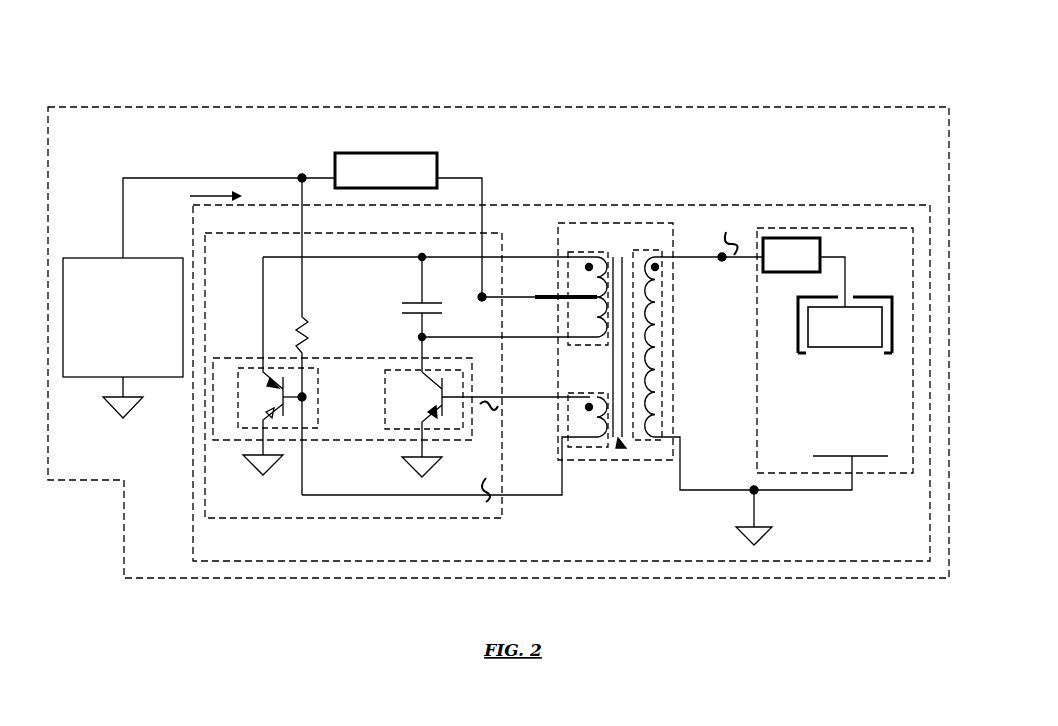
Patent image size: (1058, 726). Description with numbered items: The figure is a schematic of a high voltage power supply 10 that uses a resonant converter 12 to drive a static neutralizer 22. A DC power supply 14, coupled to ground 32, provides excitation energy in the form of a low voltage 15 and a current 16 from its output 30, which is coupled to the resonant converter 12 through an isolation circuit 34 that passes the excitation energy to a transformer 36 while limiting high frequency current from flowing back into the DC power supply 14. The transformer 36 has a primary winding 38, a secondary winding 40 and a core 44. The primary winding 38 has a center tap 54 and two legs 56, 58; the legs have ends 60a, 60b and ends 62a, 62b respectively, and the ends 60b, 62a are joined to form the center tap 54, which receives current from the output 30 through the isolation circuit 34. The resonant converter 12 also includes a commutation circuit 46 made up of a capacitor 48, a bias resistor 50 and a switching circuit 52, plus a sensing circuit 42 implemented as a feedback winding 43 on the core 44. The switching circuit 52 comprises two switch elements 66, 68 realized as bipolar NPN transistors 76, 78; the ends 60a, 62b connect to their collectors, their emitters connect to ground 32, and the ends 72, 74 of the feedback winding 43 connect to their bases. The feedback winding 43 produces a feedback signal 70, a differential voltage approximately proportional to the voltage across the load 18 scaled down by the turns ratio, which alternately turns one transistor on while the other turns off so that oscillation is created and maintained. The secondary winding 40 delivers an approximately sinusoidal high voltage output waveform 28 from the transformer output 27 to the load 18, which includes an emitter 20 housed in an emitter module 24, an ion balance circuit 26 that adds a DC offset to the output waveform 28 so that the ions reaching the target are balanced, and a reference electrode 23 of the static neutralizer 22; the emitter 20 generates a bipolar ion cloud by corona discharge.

The high voltage power supply 10 is at (170, 577).
The resonant converter 12 is at (890, 204).
The DC power supply 14 is at (199, 277).
The low voltage 15 is at (136, 170).
The current 16 is at (246, 193).
The load 18 is at (805, 472).
The emitter 20 is at (876, 345).
The static neutralizer 22 is at (680, 98).
The reference electrode 23 is at (875, 458).
The emitter module 24 is at (872, 297).
The ion balance circuit 26 is at (804, 272).
The transformer output 27 is at (722, 261).
The output waveform 28 is at (738, 218).
The output 30 is at (302, 175).
The ground 32 is at (132, 408).
The isolation circuit 34 is at (408, 225).
The transformer 36 is at (660, 458).
The primary winding 38 is at (612, 252).
The secondary winding 40 is at (666, 392).
The sensing circuit 42 is at (568, 422).
The feedback winding 43 is at (596, 442).
The core 44 is at (620, 450).
The commutation circuit 46 is at (416, 518).
The capacitor 48 is at (410, 312).
The bias resistor 50 is at (305, 320).
The switching circuit 52 is at (312, 441).
The center tap 54 is at (482, 293).
The leg 56 is at (586, 262).
The leg 58 is at (596, 325).
The end 60a is at (536, 257).
The end 60b is at (552, 297).
The end 62a is at (550, 298).
The end 62b is at (540, 338).
The switch element 66 is at (317, 404).
The switch element 68 is at (390, 408).
The feedback signal 70 is at (488, 420).
The end 72 is at (560, 496).
The end 74 is at (542, 397).
The bipolar NPN transistor 76 is at (265, 380).
The bipolar NPN transistor 78 is at (422, 388).